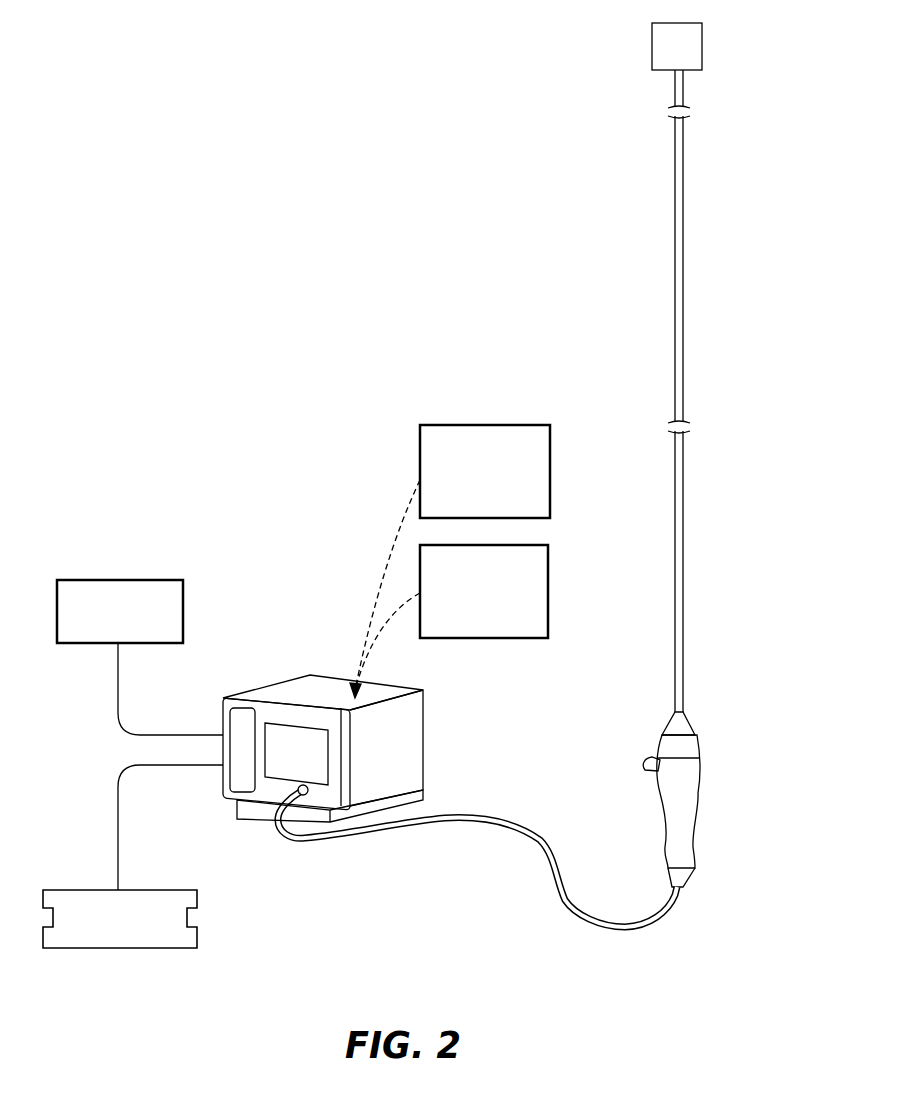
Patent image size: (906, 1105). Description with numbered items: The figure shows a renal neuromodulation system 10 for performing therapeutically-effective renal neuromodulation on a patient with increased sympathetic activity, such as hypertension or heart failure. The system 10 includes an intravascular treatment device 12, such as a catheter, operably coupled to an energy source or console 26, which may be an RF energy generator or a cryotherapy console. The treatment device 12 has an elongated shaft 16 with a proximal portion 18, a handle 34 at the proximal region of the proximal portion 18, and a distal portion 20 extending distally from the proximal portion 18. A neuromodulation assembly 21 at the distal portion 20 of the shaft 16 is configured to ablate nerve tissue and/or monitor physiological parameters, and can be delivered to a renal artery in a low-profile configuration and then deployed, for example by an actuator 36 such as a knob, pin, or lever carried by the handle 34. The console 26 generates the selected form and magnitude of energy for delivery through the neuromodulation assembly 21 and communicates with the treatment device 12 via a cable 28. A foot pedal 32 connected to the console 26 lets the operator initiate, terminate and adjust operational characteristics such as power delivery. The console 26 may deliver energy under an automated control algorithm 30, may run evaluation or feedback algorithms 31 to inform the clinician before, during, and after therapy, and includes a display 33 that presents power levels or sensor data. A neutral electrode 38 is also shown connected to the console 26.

The renal neuromodulation system 10 is at (308, 598).
The intravascular treatment device 12 is at (716, 660).
The elongated shaft 16 is at (684, 336).
The proximal portion 18 is at (661, 700).
The distal portion 20 is at (633, 50).
The neuromodulation assembly 21 is at (703, 53).
The console 26 is at (418, 742).
The cable 28 is at (549, 861).
The control algorithm 30 is at (549, 593).
The evaluation or feedback algorithms 31 is at (551, 472).
The foot pedal 32 is at (85, 890).
The display 33 is at (300, 728).
The handle 34 is at (680, 826).
The actuator 36 is at (646, 765).
The neutral electrode 38 is at (122, 580).